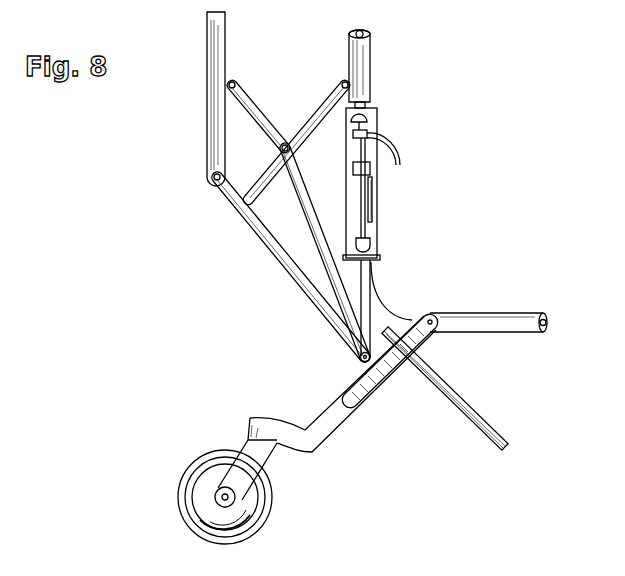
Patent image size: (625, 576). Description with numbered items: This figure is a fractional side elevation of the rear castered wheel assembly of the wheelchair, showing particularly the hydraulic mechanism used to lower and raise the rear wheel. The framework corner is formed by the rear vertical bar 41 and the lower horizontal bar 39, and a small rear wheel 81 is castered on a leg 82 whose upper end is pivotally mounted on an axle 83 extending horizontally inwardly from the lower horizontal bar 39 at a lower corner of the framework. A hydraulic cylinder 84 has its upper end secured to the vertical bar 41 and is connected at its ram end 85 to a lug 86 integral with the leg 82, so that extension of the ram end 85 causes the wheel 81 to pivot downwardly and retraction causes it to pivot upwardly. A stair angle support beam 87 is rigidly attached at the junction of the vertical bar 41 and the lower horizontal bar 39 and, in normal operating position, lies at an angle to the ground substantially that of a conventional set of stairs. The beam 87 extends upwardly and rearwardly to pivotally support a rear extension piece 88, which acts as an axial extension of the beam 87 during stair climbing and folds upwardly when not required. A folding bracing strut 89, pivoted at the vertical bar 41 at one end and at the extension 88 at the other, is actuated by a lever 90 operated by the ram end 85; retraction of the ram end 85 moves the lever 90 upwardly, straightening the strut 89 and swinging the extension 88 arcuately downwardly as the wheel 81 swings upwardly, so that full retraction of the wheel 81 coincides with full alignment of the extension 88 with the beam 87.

The lower horizontal bar 39 is at (480, 323).
The rear vertical bar 41 is at (372, 87).
The wheel 81 is at (252, 515).
The leg 82 is at (347, 420).
The axle 83 is at (427, 318).
The hydraulic cylinder 84 is at (373, 205).
The ram end 85 is at (360, 352).
The lug 86 is at (362, 362).
The stair angle support beam 87 is at (453, 387).
The rear extension piece 88 is at (207, 95).
The folding bracing strut 89 is at (265, 125).
The lever 90 is at (307, 210).